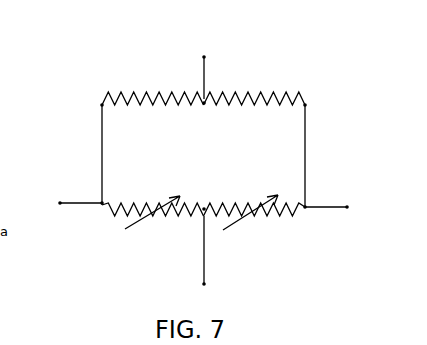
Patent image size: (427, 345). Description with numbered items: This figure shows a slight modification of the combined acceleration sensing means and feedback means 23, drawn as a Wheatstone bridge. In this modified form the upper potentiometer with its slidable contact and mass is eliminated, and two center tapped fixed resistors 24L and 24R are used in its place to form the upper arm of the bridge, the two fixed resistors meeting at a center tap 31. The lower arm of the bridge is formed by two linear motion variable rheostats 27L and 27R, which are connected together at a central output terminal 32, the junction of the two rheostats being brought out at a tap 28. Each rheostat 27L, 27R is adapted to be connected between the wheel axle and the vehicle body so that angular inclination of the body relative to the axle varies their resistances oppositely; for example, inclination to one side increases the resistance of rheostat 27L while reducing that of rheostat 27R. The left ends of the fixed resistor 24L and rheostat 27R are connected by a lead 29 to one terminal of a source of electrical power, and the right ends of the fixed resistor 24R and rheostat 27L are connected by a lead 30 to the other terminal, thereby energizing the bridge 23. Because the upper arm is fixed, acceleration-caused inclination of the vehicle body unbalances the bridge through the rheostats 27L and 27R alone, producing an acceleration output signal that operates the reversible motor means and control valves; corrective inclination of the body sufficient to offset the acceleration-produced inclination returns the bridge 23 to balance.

The combined acceleration sensing means and feedback means 23 is at (105, 248).
The center tapped fixed resistor 24L is at (156, 92).
The center tapped fixed resistor 24R is at (291, 52).
The linear motion variable rheostat 27R is at (191, 217).
The linear motion variable rheostat 27L is at (241, 223).
The lower center tap 28 is at (204, 250).
The lead 29 is at (60, 203).
The lead 30 is at (347, 207).
The upper center tap 31 is at (204, 57).
The central output terminal 32 is at (204, 284).